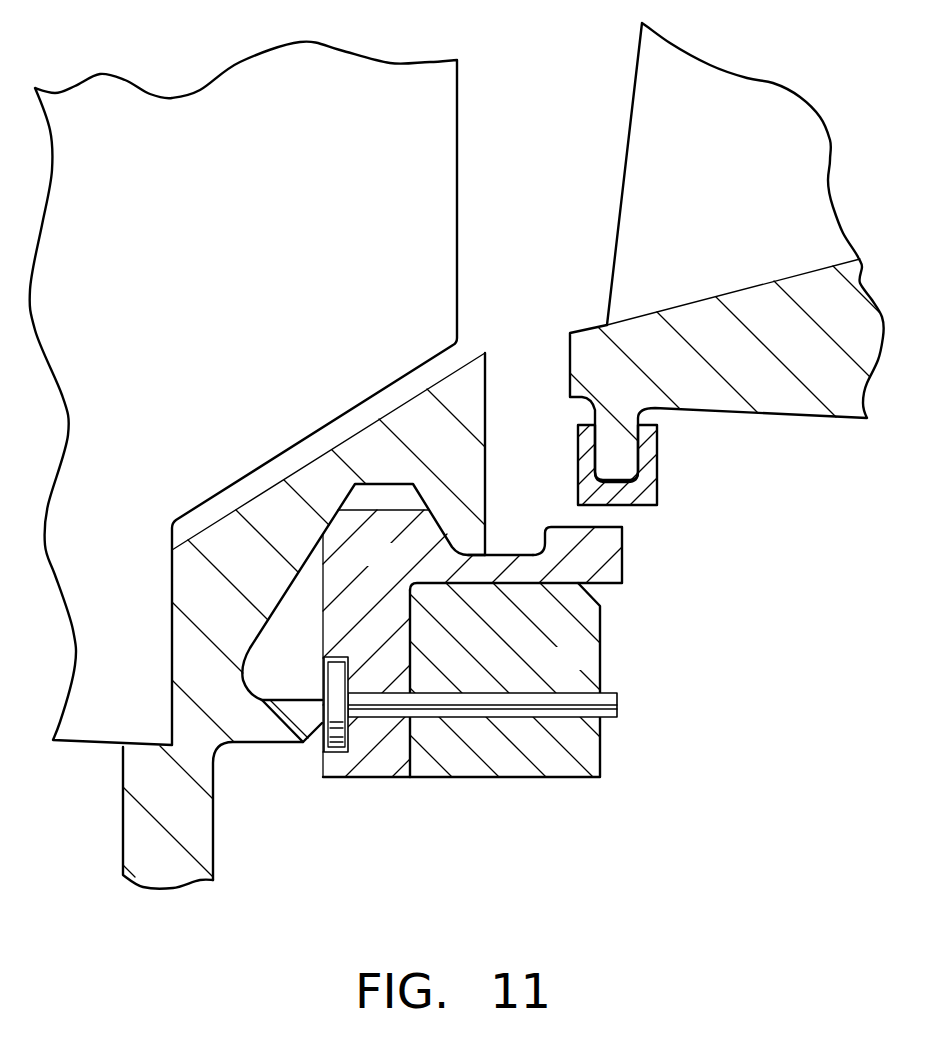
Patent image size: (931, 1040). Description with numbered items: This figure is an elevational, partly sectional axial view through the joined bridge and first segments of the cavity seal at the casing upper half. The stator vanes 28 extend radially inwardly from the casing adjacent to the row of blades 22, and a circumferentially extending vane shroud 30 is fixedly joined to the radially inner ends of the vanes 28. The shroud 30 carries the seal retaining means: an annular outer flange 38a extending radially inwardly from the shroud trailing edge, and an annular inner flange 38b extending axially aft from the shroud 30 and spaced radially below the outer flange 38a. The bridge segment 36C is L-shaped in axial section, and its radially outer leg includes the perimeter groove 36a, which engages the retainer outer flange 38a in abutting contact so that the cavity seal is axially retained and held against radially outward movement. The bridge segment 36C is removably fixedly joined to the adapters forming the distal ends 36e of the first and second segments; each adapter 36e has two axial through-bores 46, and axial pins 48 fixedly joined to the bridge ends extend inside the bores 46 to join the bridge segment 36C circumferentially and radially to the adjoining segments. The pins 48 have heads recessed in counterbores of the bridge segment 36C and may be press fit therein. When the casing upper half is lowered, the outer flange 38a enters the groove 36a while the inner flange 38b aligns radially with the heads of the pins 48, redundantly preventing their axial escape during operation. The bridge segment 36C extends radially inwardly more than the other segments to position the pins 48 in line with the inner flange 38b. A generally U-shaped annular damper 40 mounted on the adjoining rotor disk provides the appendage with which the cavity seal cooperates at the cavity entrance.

The blades 22 is at (716, 180).
The stator vanes 28 is at (228, 203).
The vane shroud 30 is at (123, 823).
The upper groove 36a is at (507, 553).
The bridge segment 36C is at (636, 544).
The distal ends (adapters) 36e is at (587, 745).
The outer flange 38a is at (441, 525).
The inner flange 38b is at (267, 745).
The damper 40 is at (650, 460).
The axial through-bores 46 is at (519, 692).
The axial pins 48 is at (612, 700).